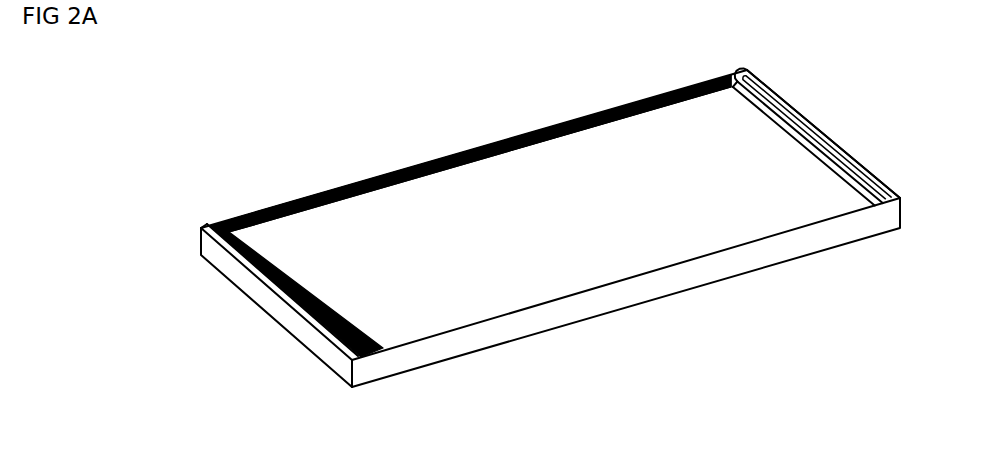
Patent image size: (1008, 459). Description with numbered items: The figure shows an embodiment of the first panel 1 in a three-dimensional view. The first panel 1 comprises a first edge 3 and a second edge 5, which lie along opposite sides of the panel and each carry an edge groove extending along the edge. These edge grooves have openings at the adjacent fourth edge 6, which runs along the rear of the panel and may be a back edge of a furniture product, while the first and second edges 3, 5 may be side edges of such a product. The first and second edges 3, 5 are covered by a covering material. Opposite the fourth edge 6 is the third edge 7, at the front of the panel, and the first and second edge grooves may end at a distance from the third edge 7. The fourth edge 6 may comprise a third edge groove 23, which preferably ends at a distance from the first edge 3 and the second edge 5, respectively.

The first panel 1 is at (665, 145).
The first edge 3 is at (835, 135).
The second edge 5 is at (257, 287).
The fourth edge 6 is at (525, 137).
The third edge 7 is at (642, 293).
The third edge groove 23 is at (430, 163).